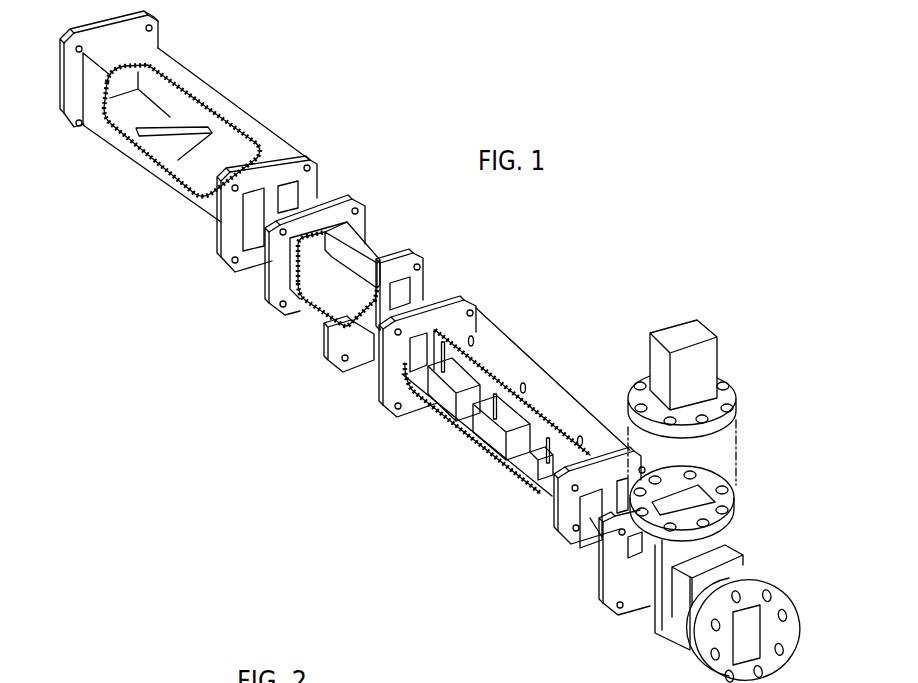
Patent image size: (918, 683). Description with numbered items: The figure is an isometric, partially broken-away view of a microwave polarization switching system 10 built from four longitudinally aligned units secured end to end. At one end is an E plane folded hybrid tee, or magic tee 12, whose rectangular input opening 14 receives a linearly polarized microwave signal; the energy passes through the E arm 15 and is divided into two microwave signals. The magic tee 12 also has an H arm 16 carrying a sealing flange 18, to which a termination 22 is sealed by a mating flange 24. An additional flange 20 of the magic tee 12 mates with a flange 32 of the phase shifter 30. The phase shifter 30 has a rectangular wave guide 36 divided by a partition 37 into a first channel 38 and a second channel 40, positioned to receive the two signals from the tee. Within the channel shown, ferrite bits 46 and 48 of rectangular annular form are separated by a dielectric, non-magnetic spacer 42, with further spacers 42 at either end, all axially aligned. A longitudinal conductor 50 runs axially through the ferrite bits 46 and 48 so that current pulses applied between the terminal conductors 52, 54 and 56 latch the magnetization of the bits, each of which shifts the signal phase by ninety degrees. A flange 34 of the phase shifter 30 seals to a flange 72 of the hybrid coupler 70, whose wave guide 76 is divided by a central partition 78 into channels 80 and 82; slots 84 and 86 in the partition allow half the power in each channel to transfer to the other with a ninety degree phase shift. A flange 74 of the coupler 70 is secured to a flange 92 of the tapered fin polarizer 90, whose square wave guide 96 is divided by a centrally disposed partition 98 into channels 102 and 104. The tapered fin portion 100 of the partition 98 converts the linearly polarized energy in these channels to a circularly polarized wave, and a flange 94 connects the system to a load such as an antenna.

The polarization switching system 10 is at (518, 234).
The E plane folded hybrid tee 12 is at (657, 671).
The rectangular input opening 14 is at (752, 632).
The E arm 15 is at (720, 567).
The H arm 16 is at (650, 550).
The sealing flange 18 is at (730, 500).
The flange 20 is at (617, 585).
The termination 22 is at (712, 353).
The flange 24 is at (727, 392).
The phase shifter 30 is at (438, 510).
The flange 32 is at (647, 467).
The flange 34 is at (470, 299).
The wave guide 36 is at (493, 362).
The partition 37 is at (560, 507).
The first channel 38 is at (620, 490).
The second channel 40 is at (590, 518).
The dielectric non-magnetic spacer 42 is at (432, 392).
The ferrite bit 46 is at (510, 457).
The ferrite bit 48 is at (457, 410).
The longitudinal conductor 50 is at (523, 505).
The terminal conductor 52 is at (581, 434).
The terminal conductor 54 is at (526, 381).
The terminal conductor 56 is at (473, 335).
The hybrid coupler 70 is at (273, 359).
The flange 72 is at (418, 258).
The flange 74 is at (357, 205).
The wave guide 76 is at (373, 253).
The central partition 78 is at (317, 268).
The channel 80 is at (402, 293).
The channel 82 is at (334, 364).
The slot 84 is at (342, 258).
The slot 86 is at (333, 313).
The tapered fin polarizer 90 is at (125, 237).
The flange 92 is at (307, 162).
The flange 94 is at (152, 17).
The wave guide 96 is at (160, 60).
The partition 98 is at (197, 172).
The tapered fin portion 100 is at (153, 128).
The channel 102 is at (292, 192).
The channel 104 is at (252, 217).